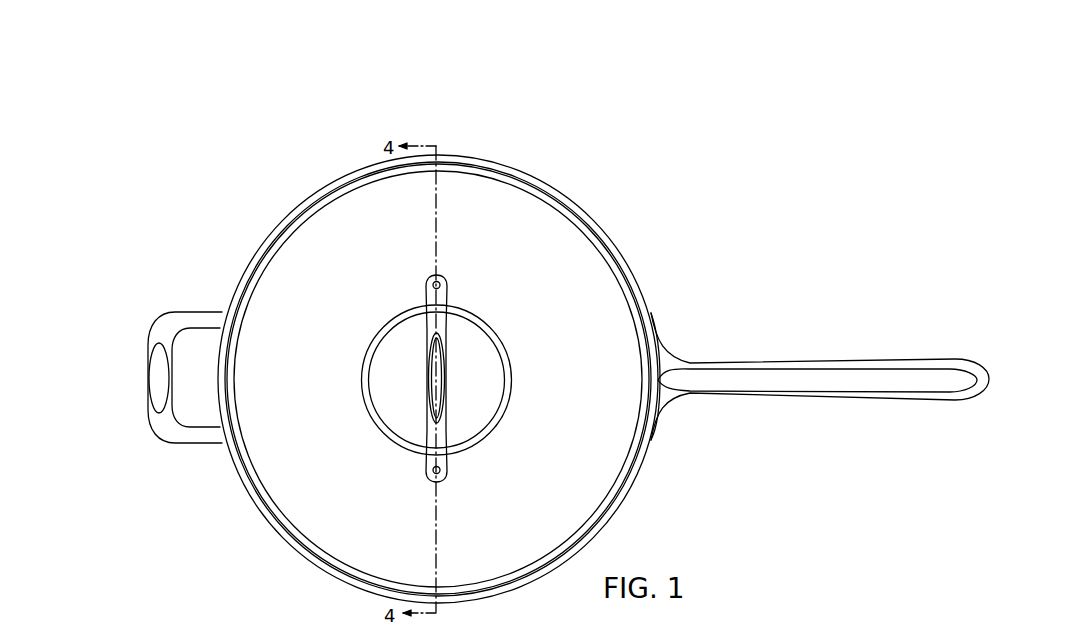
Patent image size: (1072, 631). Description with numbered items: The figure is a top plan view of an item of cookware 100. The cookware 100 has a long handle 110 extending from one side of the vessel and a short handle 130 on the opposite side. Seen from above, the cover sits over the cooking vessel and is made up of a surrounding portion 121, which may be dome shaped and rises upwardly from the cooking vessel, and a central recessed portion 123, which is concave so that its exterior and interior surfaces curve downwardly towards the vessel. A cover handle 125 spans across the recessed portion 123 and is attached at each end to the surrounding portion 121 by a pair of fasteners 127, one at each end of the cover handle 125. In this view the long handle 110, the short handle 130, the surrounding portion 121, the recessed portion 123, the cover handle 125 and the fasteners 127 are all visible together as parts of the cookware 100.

The item of cookware 100 is at (553, 130).
The long handle 110 is at (967, 357).
The surrounding portion 121 is at (597, 272).
The recessed portion 123 is at (393, 393).
The cover handle 125 is at (447, 460).
The fasteners 127 is at (438, 287).
The short handle 130 is at (183, 325).